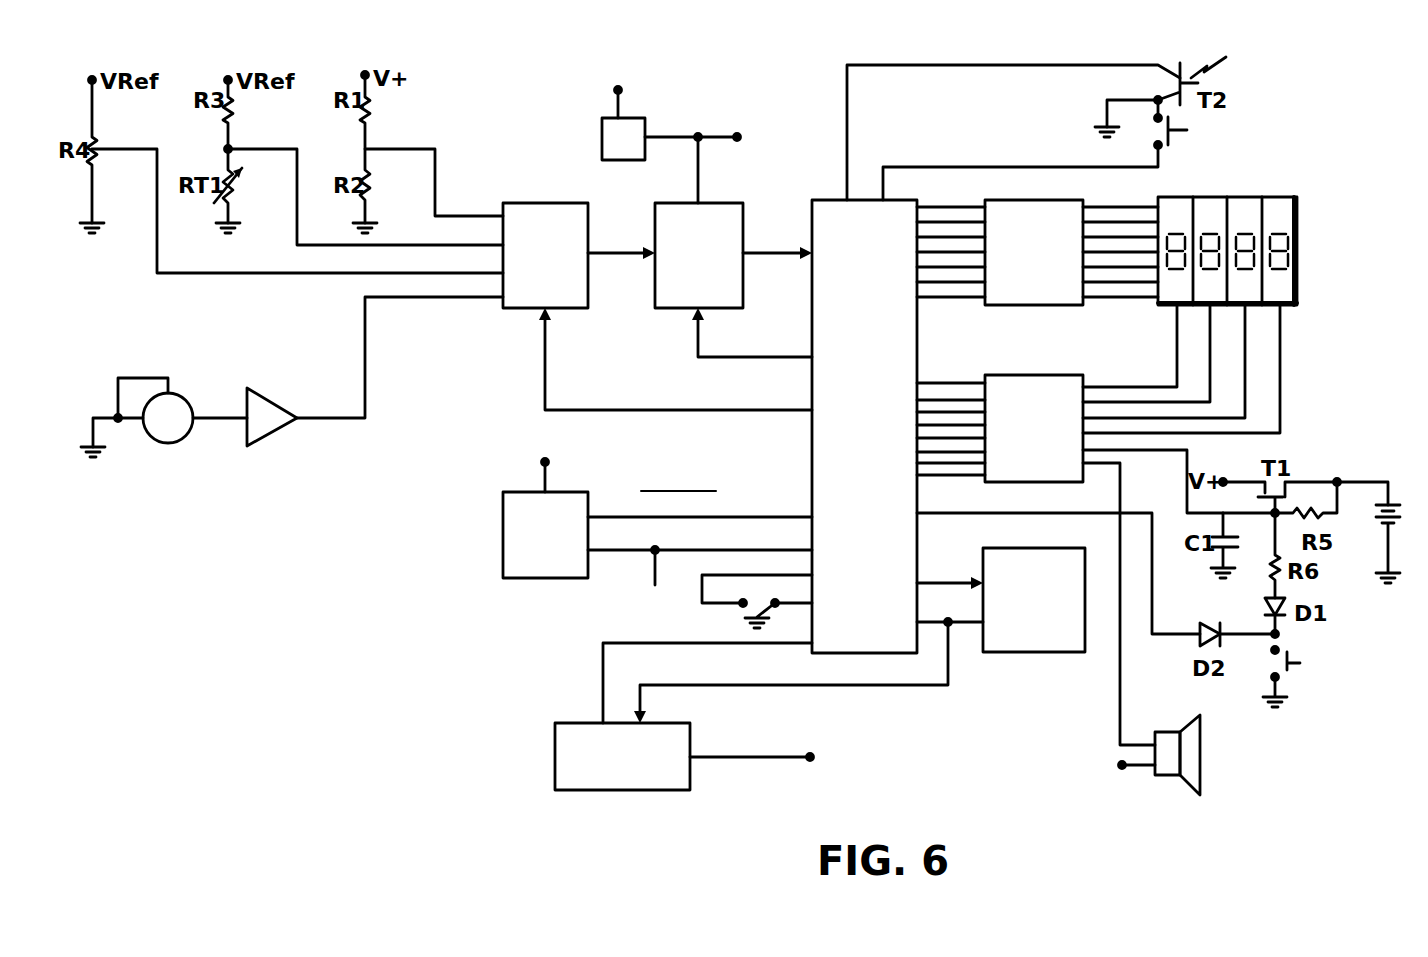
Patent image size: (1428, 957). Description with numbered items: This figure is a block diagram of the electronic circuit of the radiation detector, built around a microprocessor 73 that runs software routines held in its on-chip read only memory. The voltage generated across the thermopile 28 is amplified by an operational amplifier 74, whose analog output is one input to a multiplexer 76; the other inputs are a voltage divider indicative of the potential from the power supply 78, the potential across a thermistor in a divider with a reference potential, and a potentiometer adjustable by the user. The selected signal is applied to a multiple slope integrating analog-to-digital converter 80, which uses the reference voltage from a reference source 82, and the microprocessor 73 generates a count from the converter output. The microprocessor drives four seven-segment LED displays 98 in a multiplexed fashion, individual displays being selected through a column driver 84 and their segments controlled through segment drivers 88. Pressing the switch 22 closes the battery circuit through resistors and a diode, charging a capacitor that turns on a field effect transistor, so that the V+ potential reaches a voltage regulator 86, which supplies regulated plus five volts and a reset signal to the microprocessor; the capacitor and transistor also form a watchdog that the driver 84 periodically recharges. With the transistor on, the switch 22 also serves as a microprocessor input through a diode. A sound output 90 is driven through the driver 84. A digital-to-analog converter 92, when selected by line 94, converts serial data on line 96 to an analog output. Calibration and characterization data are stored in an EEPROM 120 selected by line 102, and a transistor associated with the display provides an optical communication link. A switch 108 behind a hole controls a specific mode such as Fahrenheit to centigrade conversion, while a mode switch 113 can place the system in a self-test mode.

The switch 22 is at (1297, 667).
The thermopile 28 is at (192, 433).
The microprocessor 73 is at (812, 425).
The operational amplifier 74 is at (273, 425).
The multiplexer 76 is at (517, 308).
The power supply 78 is at (678, 413).
The analog-to-digital converter 80 is at (660, 308).
The reference source 82 is at (648, 118).
The column driver 84 is at (1068, 375).
The voltage regulator 86 is at (1072, 200).
The segment drivers 88 is at (503, 540).
The sound output 90 is at (1200, 773).
The digital-to-analog converter 92 is at (637, 790).
The select line 94 is at (603, 670).
The serial data line 96 is at (812, 690).
The 7-segment LED displays 98 is at (1297, 288).
The select line 102 is at (932, 580).
The switch 108 is at (1173, 122).
The mode switch 113 is at (747, 612).
The EEPROM 120 is at (1040, 652).